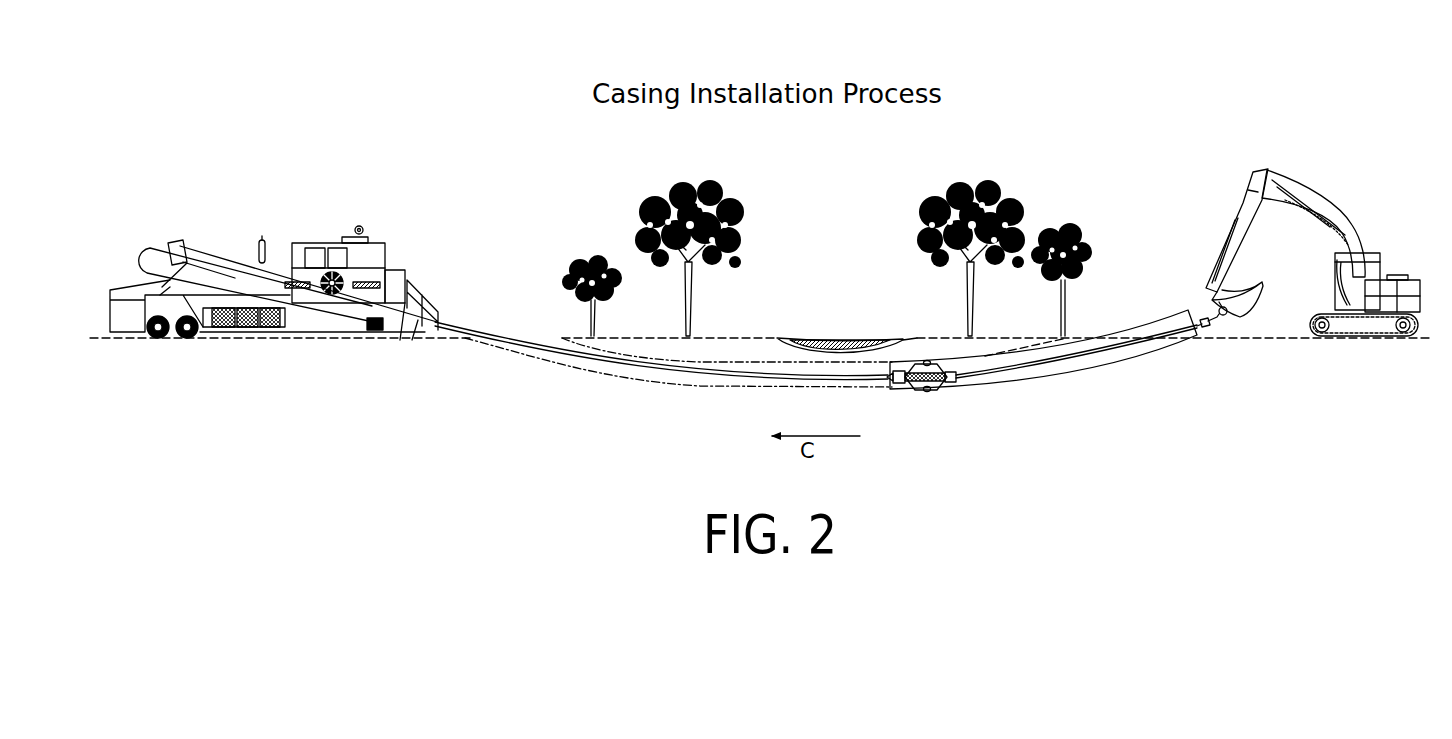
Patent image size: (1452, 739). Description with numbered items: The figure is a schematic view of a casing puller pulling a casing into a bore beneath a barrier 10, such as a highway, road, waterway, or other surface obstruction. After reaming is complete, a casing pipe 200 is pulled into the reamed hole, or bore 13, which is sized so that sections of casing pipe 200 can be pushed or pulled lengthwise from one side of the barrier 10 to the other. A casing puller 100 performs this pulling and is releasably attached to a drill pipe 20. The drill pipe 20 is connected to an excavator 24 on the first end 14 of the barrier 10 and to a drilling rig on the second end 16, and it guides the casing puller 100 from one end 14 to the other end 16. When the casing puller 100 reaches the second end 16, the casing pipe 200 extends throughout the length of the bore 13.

The barrier 10 is at (830, 342).
The bore 13 is at (586, 368).
The first end 14 is at (1108, 331).
The second end 16 is at (544, 337).
The drill pipe 20 is at (1143, 343).
The excavator 24 is at (1292, 170).
The casing puller 100 is at (923, 387).
The casing pipe 200 is at (1058, 376).